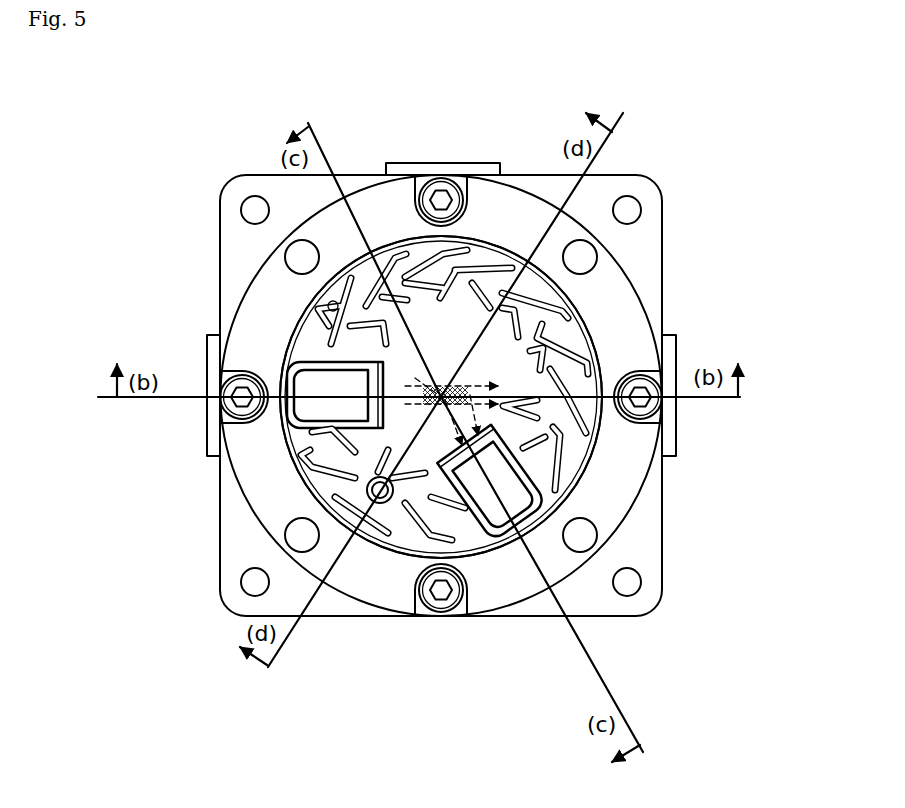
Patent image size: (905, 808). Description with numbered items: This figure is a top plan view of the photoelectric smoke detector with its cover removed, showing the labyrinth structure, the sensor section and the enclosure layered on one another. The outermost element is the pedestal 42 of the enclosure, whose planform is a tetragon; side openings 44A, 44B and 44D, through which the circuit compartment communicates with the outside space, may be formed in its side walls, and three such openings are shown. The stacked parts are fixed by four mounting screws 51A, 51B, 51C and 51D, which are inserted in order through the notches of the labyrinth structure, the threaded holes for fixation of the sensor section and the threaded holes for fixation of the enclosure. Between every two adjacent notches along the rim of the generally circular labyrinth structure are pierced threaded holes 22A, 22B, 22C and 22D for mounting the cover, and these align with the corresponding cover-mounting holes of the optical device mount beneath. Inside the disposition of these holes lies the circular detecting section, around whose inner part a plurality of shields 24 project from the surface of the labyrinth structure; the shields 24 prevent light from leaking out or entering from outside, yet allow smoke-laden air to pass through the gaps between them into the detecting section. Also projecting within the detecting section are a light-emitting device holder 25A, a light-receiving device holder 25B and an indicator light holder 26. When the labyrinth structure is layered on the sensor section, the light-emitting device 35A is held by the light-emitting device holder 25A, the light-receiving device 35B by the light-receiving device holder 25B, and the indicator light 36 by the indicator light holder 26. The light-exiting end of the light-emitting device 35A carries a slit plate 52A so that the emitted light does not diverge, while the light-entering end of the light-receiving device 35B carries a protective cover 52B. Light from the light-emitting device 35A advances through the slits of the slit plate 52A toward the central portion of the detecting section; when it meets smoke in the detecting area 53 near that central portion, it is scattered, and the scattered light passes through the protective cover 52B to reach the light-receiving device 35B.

The threaded hole for mounting the cover 22A is at (285, 257).
The threaded hole for mounting the cover 22B is at (285, 538).
The threaded hole for mounting the cover 22C is at (593, 541).
The threaded hole for mounting the cover 22D is at (593, 257).
The shield 24 is at (455, 372).
The light-emitting device holder 25A is at (283, 430).
The light-receiving device holder 25B is at (531, 527).
The indicator light holder 26 is at (378, 505).
The light-emitting device 35A is at (335, 345).
The light-receiving device 35B is at (518, 510).
The indicator light 36 is at (372, 500).
The pedestal 42 is at (225, 542).
The side opening 44A is at (421, 158).
The side opening 44B is at (205, 380).
The side opening 44D is at (678, 406).
The mounting screw 51A is at (442, 195).
The mounting screw 51B is at (222, 400).
The mounting screw 51C is at (438, 598).
The mounting screw 51D is at (660, 395).
The slit plate 52A is at (315, 381).
The protective cover 52B is at (520, 502).
The detecting area 53 is at (470, 388).